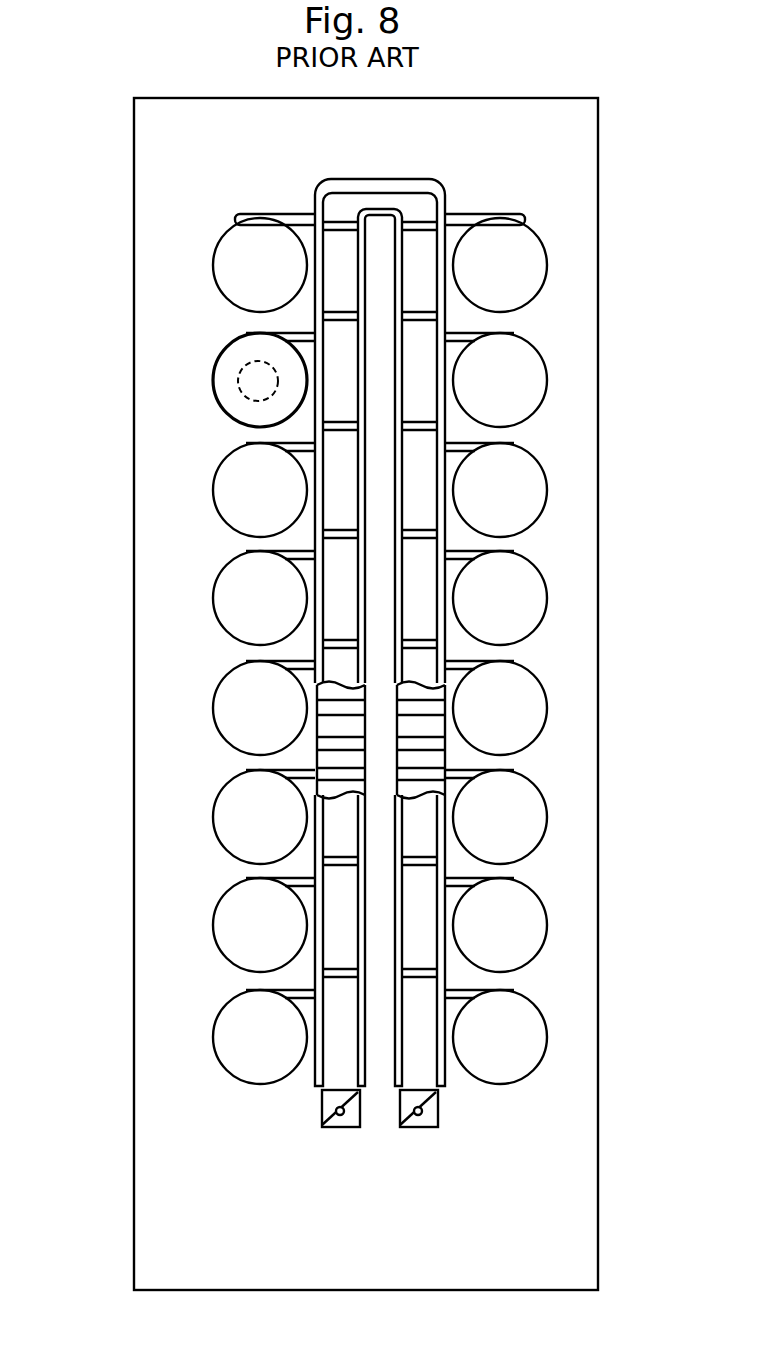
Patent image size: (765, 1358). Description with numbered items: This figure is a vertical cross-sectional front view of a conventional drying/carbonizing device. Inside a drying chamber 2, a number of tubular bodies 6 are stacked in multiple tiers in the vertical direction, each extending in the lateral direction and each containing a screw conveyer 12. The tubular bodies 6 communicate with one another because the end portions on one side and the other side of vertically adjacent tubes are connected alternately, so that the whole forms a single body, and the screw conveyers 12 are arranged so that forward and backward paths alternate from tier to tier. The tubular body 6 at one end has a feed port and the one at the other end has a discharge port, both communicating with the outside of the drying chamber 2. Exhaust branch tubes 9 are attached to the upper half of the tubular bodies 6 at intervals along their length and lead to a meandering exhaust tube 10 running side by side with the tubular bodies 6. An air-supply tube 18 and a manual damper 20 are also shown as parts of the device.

The drying chamber 2 is at (178, 983).
The tubular body 6 is at (213, 277).
The exhaust branch tube 9 is at (238, 214).
The meandering exhaust tube 10 is at (330, 742).
The screw conveyer 12 is at (238, 382).
The air-supply tube 18 is at (417, 298).
The manual damper 20 is at (336, 1111).